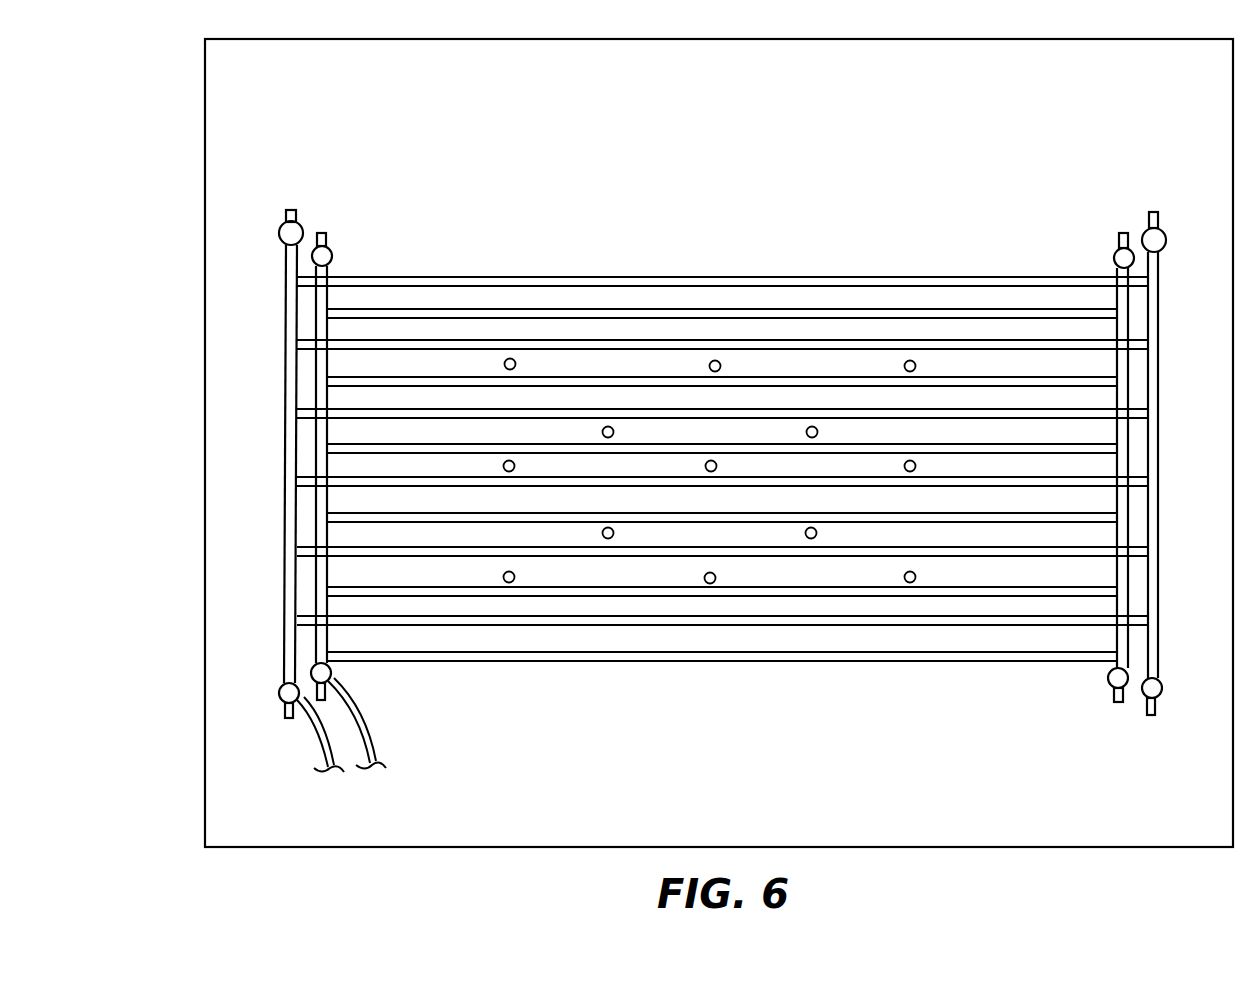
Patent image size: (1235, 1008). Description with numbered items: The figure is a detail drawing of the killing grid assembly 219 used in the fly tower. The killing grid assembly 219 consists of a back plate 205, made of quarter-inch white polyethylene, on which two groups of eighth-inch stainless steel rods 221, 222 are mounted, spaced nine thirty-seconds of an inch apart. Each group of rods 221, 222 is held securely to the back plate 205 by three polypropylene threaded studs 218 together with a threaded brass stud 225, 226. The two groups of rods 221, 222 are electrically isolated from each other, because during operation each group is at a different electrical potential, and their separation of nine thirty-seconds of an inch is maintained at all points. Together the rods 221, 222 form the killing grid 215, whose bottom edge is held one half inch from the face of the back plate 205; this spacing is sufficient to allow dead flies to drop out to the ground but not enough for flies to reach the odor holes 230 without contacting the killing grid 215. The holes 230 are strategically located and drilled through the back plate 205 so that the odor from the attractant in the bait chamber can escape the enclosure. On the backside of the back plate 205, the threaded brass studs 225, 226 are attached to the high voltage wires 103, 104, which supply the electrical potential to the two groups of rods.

The back plate 205 is at (230, 518).
The killing grid assembly 219 is at (660, 78).
The killing grid 215 is at (632, 277).
The holes 230 is at (704, 579).
The group of rods 221 is at (285, 278).
The group of rods 222 is at (313, 323).
The polypropylene threaded studs 218 is at (298, 225).
The threaded brass stud 225 is at (282, 700).
The threaded brass stud 226 is at (332, 675).
The high voltage wire 103 is at (328, 775).
The high voltage wire 104 is at (374, 777).